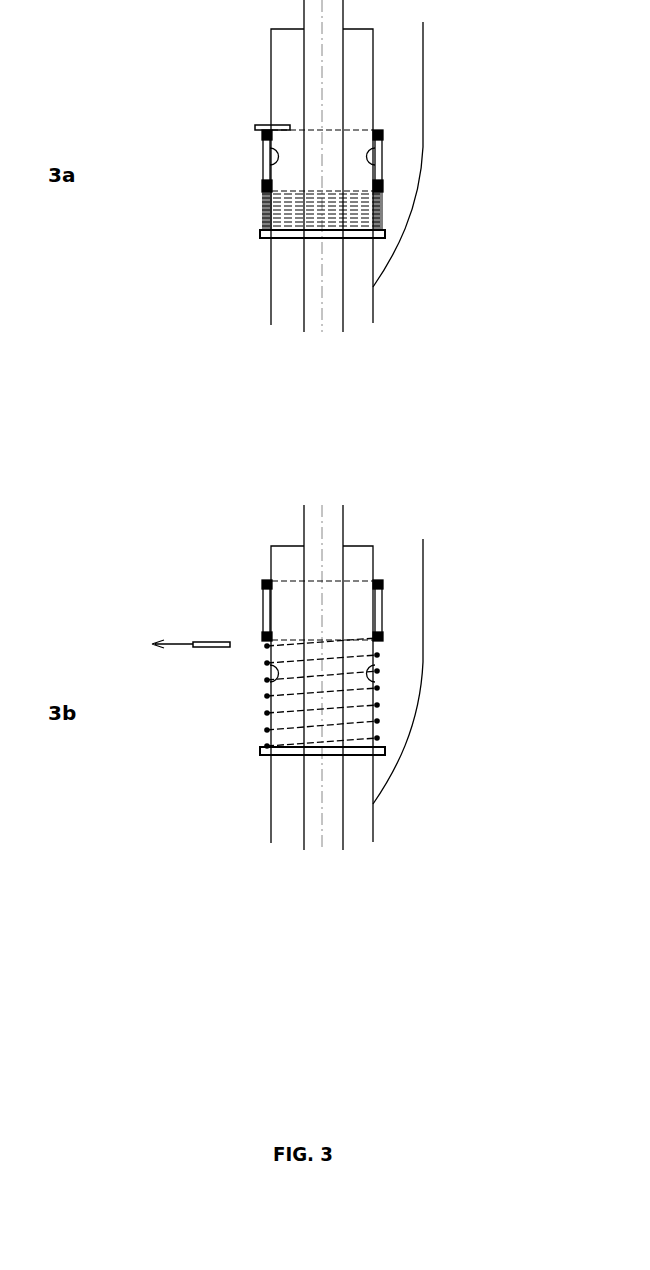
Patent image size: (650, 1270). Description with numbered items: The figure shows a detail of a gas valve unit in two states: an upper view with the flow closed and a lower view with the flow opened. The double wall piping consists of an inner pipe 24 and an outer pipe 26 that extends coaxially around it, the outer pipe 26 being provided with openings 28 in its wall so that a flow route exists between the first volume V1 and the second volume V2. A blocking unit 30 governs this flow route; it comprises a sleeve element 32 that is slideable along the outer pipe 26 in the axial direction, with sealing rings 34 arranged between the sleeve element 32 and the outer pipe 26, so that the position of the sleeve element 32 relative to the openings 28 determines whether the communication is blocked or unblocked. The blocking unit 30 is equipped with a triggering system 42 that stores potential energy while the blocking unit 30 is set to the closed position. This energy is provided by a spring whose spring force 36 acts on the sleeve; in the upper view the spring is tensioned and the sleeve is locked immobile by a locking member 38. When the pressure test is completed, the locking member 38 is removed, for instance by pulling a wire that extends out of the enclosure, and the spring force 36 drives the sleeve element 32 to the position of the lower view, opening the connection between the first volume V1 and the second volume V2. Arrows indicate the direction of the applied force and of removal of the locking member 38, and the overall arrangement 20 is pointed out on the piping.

The valve assembly 20 is at (394, 288).
The inner pipe 24 is at (345, 315).
The outer pipe 26 is at (373, 305).
The openings 28 is at (380, 167).
The blocking unit 30 is at (385, 136).
The sleeve element 32 is at (262, 183).
The sealing rings 34 is at (262, 185).
The spring force 36 is at (262, 213).
The locking member 38 is at (270, 126).
The triggering system 42 is at (202, 197).
The first volume V1 is at (287, 288).
The second volume V2 is at (198, 66).